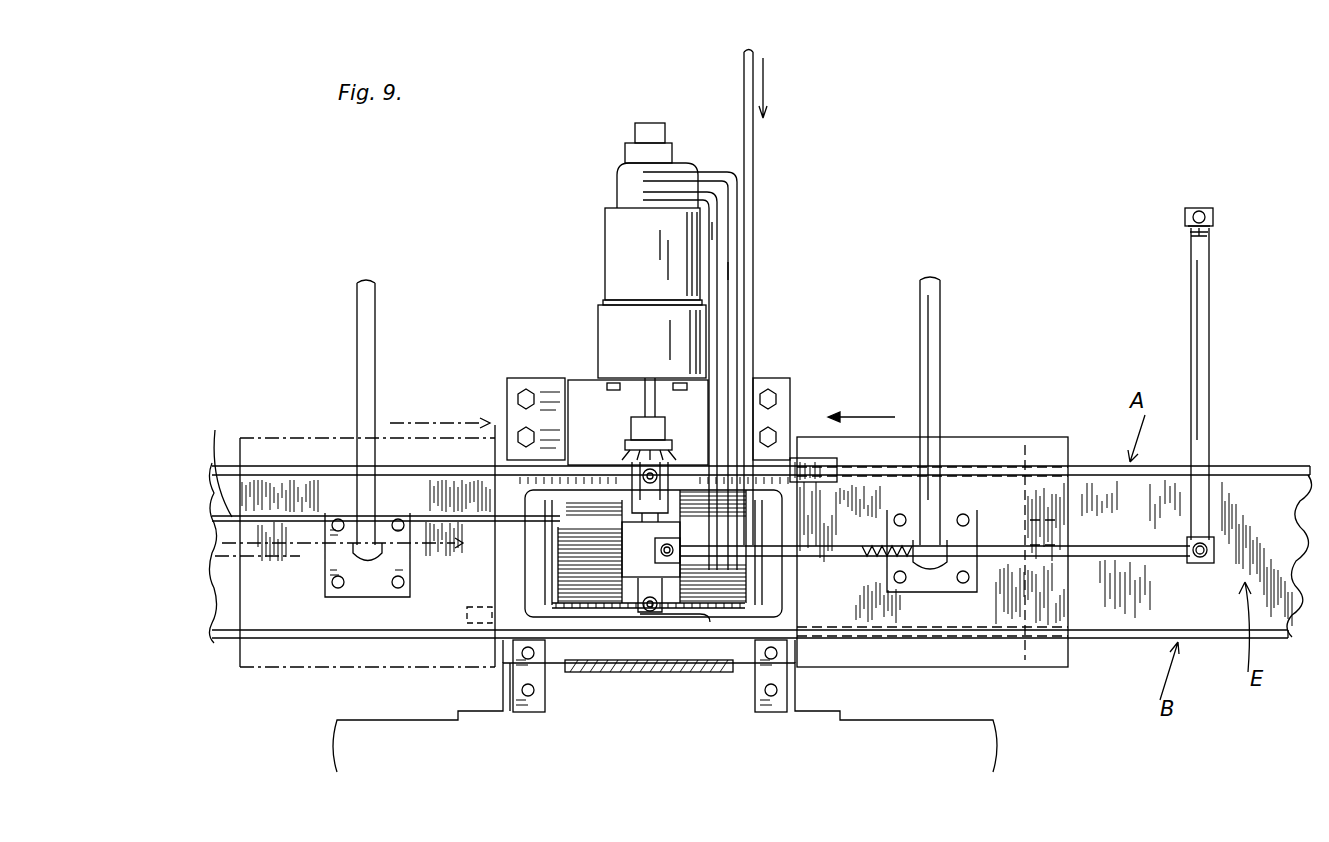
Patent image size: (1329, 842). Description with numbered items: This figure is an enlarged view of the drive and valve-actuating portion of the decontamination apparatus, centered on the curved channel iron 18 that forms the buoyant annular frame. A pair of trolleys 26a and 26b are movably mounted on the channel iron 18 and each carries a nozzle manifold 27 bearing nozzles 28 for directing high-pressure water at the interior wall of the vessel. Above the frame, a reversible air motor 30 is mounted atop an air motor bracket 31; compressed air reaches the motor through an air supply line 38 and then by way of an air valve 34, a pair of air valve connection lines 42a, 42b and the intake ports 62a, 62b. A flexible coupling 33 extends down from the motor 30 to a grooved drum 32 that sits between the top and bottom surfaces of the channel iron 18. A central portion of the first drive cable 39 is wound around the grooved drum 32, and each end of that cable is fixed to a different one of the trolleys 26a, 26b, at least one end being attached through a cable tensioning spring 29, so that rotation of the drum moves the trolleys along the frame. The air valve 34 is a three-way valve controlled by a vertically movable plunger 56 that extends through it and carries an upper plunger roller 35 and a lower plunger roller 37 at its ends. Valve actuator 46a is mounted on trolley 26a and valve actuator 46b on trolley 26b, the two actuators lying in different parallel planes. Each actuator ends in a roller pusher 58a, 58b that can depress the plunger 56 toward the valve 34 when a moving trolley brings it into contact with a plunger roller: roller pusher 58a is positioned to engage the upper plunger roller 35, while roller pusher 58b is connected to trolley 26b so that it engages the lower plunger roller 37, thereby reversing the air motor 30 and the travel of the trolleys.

The curved channel iron 18 is at (1278, 460).
The trolley 26a is at (1015, 668).
The trolley 26b is at (302, 437).
The nozzle manifold 27 is at (355, 330).
The nozzle 28 is at (1243, 248).
The cable tensioning spring 29 is at (900, 510).
The reversible air motor 30 is at (628, 246).
The air motor bracket 31 is at (560, 378).
The grooved drum 32 is at (560, 578).
The flexible coupling 33 is at (634, 375).
The air valve 34 is at (630, 580).
The upper plunger roller 35 is at (676, 460).
The lower plunger roller 37 is at (666, 616).
The air supply line 38 is at (742, 67).
The first drive cable 39 is at (214, 434).
The air valve connection line 42a is at (713, 230).
The air valve connection line 42b is at (728, 268).
The valve actuator 46a is at (824, 454).
The valve actuator 46b is at (465, 612).
The plunger 56 is at (646, 606).
The roller pusher 58a is at (626, 458).
The roller pusher 58b is at (712, 640).
The intake port 62a is at (640, 174).
The intake port 62b is at (640, 194).